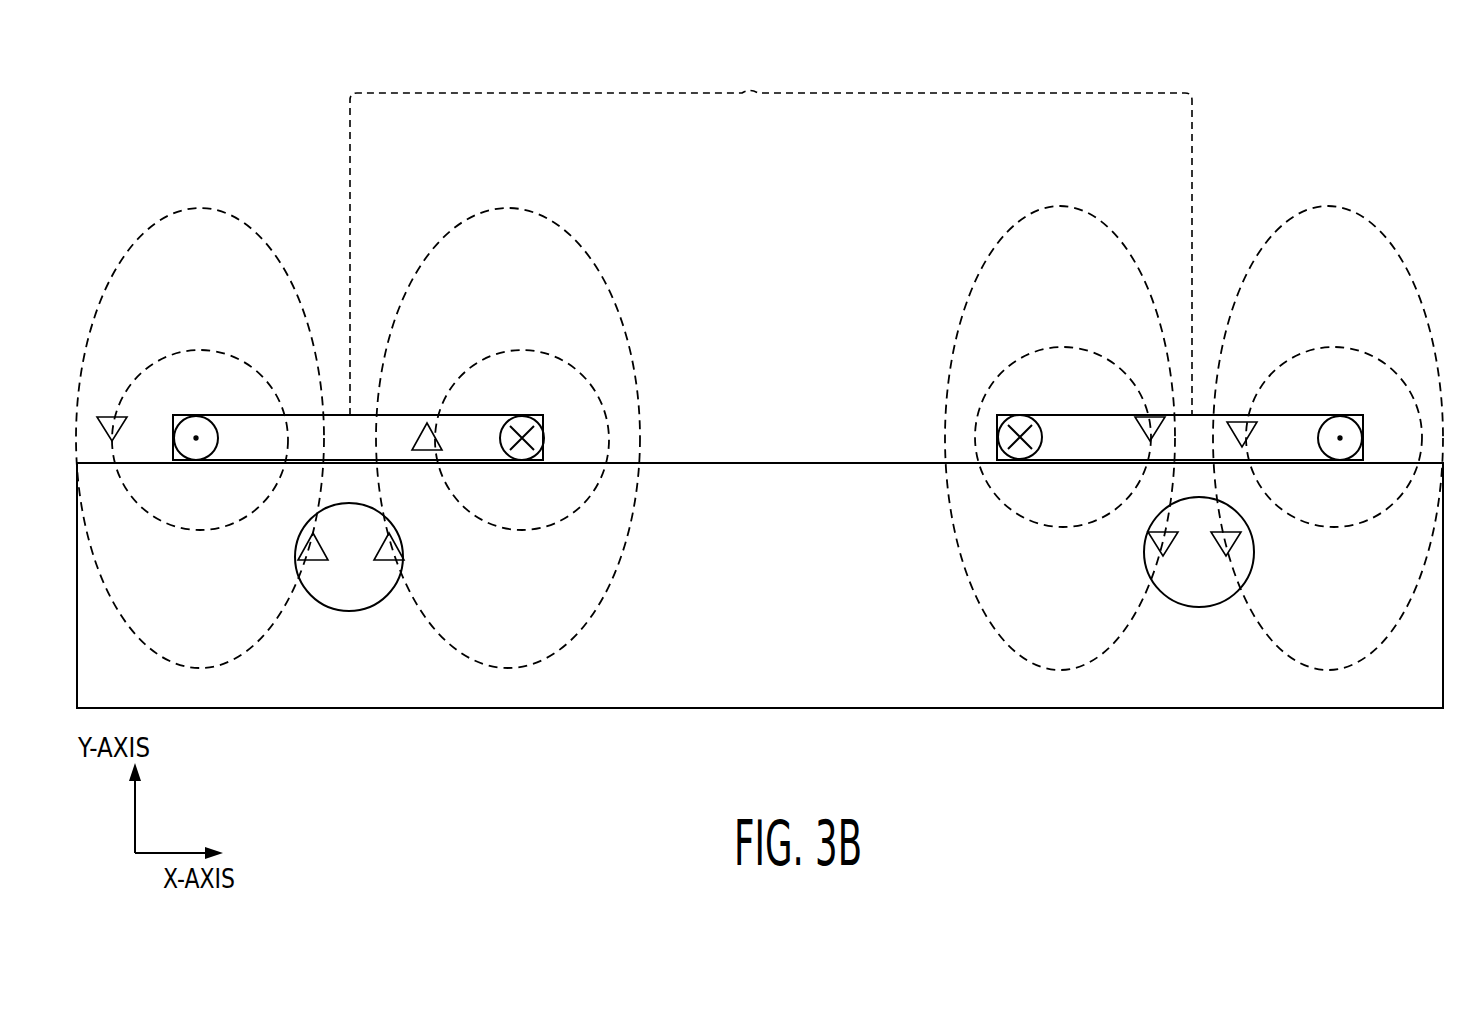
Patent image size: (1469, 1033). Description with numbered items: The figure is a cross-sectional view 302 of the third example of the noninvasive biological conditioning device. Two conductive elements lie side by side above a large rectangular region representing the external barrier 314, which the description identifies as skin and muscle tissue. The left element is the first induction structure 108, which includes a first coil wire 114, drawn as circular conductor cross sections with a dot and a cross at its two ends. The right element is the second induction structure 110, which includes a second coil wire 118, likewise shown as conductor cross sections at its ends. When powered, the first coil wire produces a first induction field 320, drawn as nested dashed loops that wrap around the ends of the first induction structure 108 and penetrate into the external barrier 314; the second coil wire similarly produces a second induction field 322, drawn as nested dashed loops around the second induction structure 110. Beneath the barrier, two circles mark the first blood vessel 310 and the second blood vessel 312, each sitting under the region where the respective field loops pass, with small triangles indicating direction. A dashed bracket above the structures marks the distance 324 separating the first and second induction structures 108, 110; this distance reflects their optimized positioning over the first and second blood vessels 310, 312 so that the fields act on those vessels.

The cross-sectional view 302 is at (140, 111).
The first induction structure 108 is at (403, 415).
The second induction structure 110 is at (1227, 415).
The first coil wire 114 is at (190, 418).
The second coil wire 118 is at (1020, 418).
The first blood vessel 310 is at (350, 611).
The second blood vessel 312 is at (1203, 607).
The external barrier 314 is at (781, 480).
The first induction field 320 is at (218, 209).
The second induction field 322 is at (1005, 232).
The distance 324 is at (771, 234).